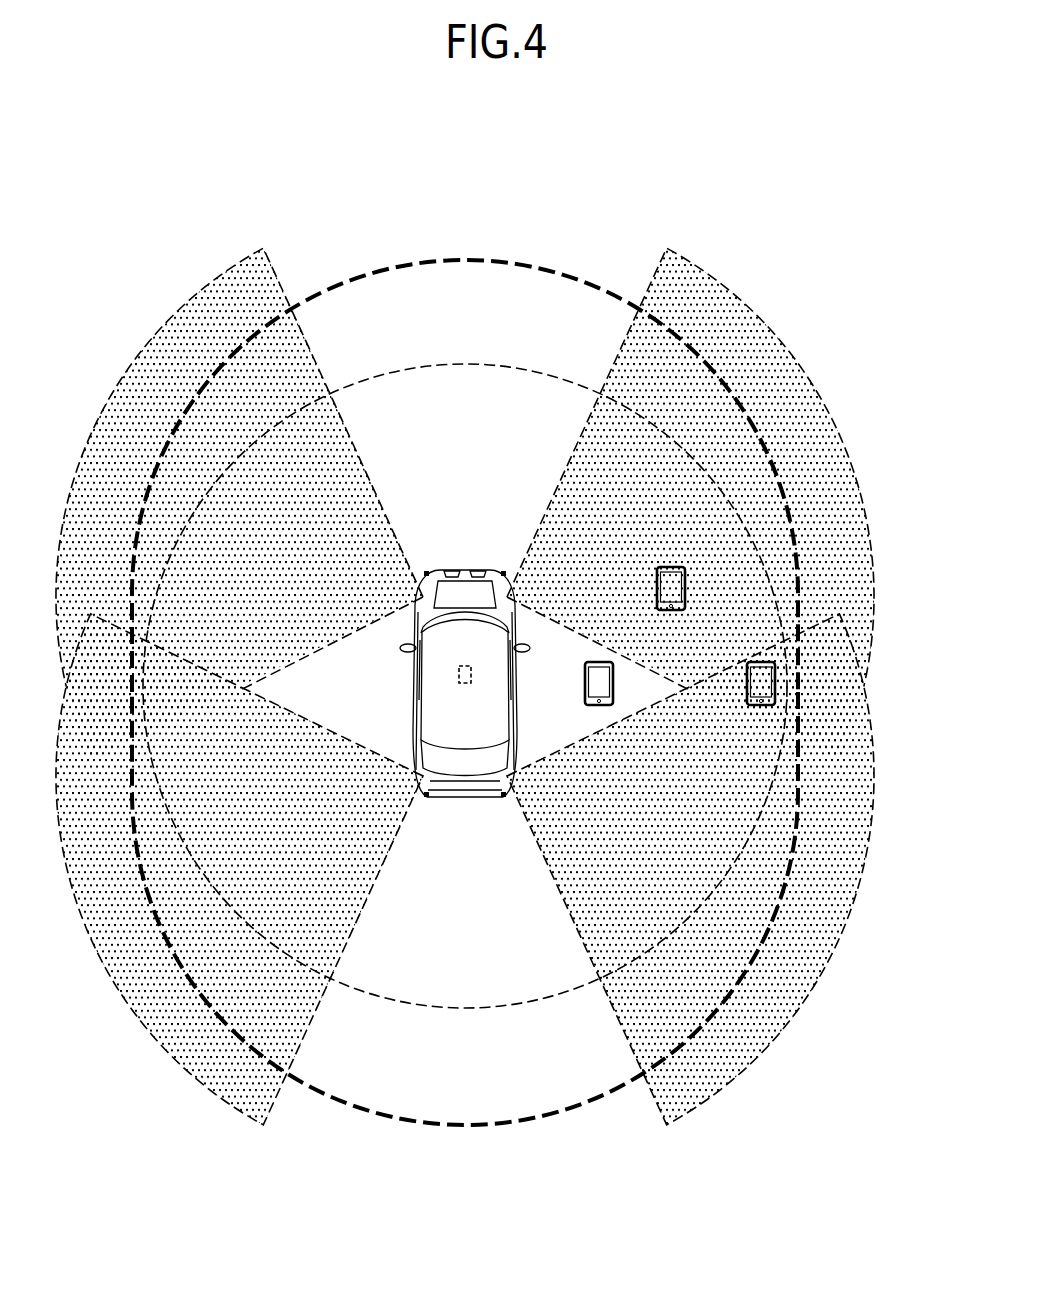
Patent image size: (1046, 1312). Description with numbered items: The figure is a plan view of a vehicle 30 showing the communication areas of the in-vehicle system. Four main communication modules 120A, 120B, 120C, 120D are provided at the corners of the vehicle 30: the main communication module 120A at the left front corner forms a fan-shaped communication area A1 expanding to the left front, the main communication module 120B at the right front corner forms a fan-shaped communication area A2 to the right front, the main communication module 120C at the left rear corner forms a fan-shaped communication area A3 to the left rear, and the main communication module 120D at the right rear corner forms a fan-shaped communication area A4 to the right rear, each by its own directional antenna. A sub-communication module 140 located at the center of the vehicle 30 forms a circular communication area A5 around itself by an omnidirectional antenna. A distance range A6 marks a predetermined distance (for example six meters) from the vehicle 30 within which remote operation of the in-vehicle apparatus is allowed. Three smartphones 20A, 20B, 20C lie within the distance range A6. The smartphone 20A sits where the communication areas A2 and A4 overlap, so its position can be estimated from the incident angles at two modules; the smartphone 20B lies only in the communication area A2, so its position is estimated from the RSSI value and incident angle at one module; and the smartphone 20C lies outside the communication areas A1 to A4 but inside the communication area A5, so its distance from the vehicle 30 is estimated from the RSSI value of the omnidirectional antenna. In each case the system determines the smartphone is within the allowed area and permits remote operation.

The communication area A1 is at (207, 283).
The communication area A2 is at (726, 285).
The communication area A3 is at (241, 1128).
The communication area A4 is at (678, 1127).
The communication area A5 is at (464, 362).
The distance range A6 is at (465, 1130).
The main communication module 120A is at (427, 572).
The main communication module 120B is at (503, 572).
The main communication module 120C is at (427, 798).
The main communication module 120D is at (503, 798).
The sub-communication module 140 is at (457, 676).
The vehicle 30 is at (519, 722).
The smartphone 20A is at (776, 680).
The smartphone 20B is at (686, 588).
The smartphone 20C is at (584, 679).